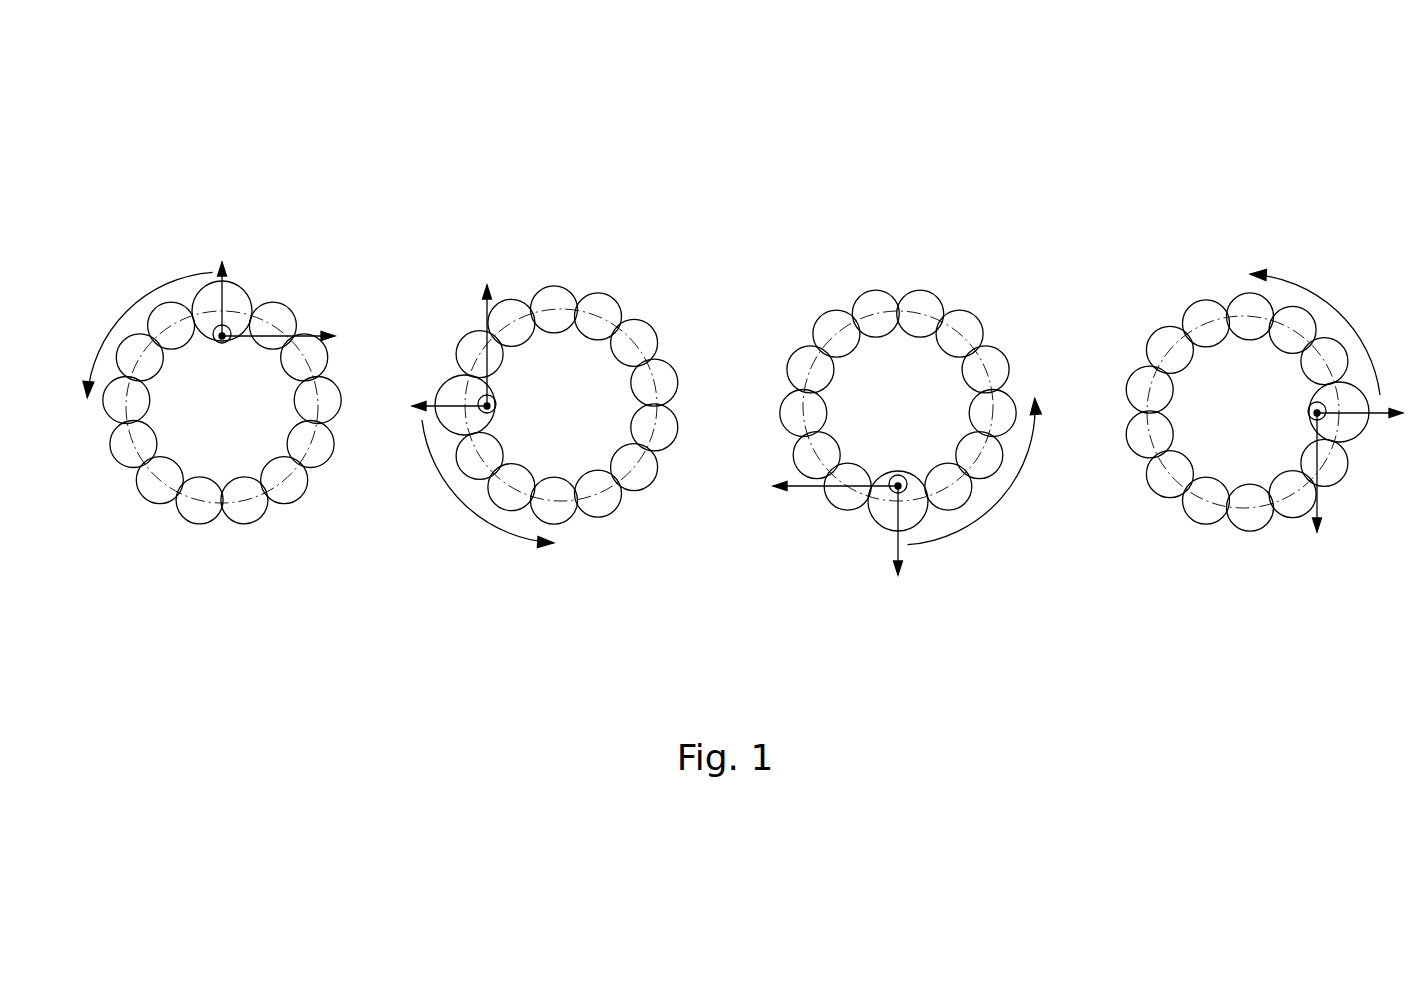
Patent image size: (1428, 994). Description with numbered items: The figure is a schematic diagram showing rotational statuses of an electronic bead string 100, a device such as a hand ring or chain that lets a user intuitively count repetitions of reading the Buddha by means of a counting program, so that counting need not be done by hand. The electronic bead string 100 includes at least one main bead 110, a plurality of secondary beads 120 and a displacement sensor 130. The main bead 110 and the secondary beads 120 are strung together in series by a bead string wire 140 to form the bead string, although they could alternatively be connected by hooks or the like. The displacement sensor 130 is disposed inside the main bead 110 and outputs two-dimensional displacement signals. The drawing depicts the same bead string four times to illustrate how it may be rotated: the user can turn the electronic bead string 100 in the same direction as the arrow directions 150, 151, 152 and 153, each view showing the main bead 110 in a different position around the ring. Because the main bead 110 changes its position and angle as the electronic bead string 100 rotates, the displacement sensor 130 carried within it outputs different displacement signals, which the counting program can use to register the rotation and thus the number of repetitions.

The electronic bead string 100 is at (175, 224).
The main bead 110 is at (230, 295).
The secondary beads 120 is at (292, 327).
The displacement sensor 130 is at (227, 333).
The bead string wire 140 is at (292, 480).
The arrow direction 150 is at (123, 308).
The arrow direction 151 is at (468, 510).
The arrow direction 152 is at (980, 520).
The arrow direction 153 is at (1328, 300).